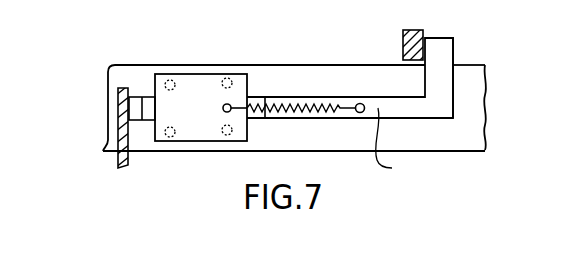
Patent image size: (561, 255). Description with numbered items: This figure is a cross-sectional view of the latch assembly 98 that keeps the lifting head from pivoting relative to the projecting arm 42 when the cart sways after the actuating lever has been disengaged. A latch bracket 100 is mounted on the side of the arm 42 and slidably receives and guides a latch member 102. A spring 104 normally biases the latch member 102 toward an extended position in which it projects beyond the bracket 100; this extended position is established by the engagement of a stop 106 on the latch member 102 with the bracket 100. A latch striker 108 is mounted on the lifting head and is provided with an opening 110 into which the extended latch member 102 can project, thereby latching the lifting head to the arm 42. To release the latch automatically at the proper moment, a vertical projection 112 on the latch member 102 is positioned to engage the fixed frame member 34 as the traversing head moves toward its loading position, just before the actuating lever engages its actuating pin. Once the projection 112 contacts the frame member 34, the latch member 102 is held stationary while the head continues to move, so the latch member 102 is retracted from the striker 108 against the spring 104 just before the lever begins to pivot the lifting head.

The latch assembly 98 is at (172, 52).
The latch bracket 100 is at (200, 118).
The latch member 102 is at (404, 145).
The spring 104 is at (290, 107).
The stop 106 is at (258, 100).
The latch striker 108 is at (118, 138).
The opening 110 is at (110, 107).
The vertical projection 112 is at (448, 47).
The frame member 34 is at (403, 43).
The projecting arm 42 is at (302, 77).